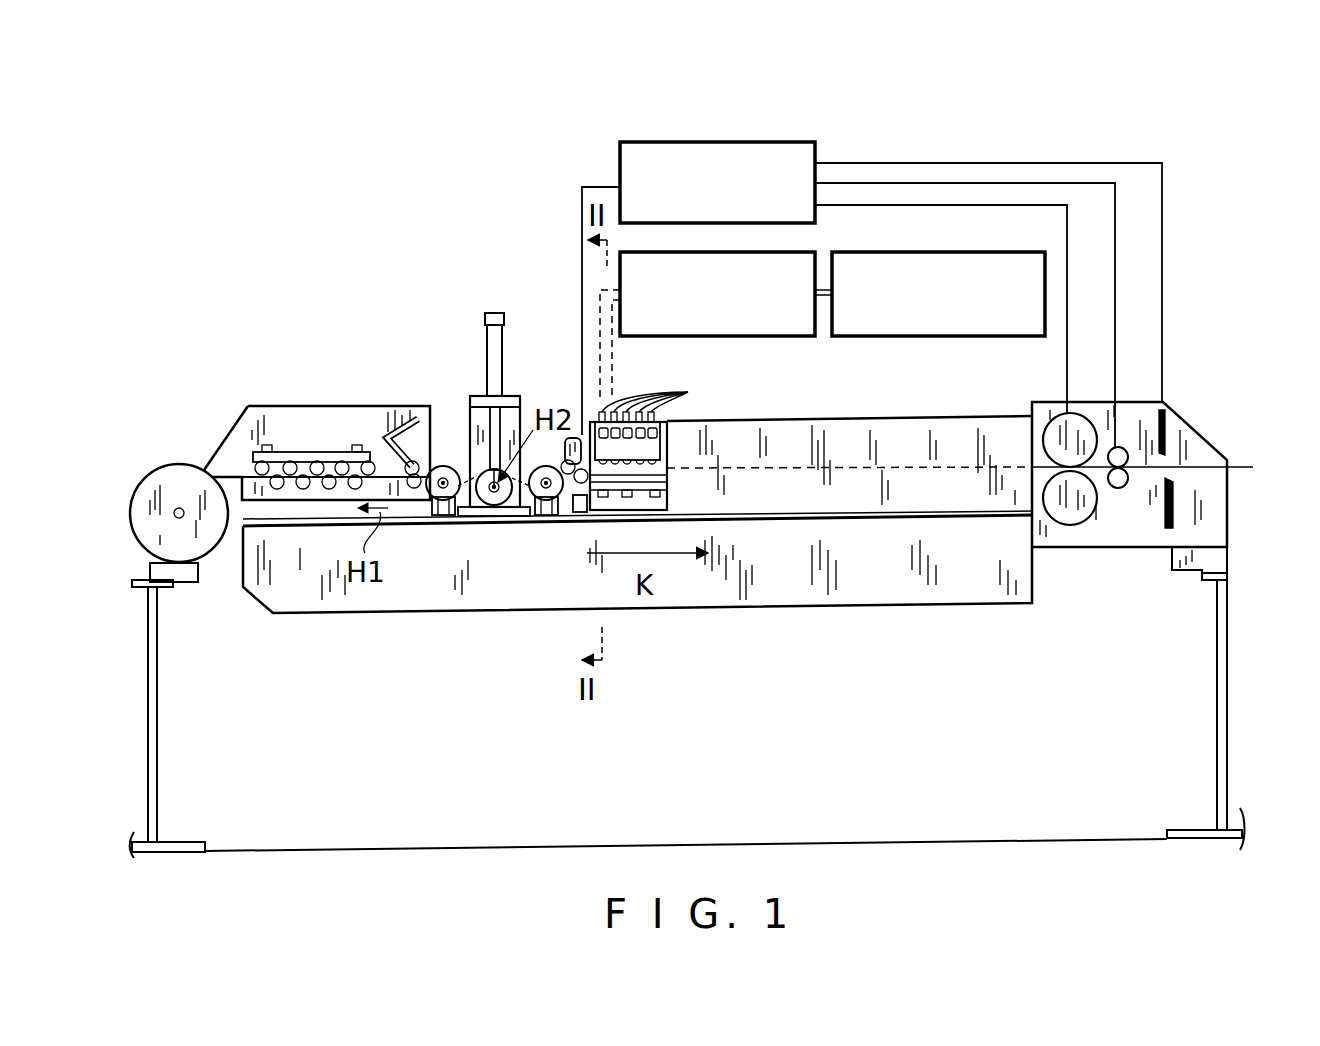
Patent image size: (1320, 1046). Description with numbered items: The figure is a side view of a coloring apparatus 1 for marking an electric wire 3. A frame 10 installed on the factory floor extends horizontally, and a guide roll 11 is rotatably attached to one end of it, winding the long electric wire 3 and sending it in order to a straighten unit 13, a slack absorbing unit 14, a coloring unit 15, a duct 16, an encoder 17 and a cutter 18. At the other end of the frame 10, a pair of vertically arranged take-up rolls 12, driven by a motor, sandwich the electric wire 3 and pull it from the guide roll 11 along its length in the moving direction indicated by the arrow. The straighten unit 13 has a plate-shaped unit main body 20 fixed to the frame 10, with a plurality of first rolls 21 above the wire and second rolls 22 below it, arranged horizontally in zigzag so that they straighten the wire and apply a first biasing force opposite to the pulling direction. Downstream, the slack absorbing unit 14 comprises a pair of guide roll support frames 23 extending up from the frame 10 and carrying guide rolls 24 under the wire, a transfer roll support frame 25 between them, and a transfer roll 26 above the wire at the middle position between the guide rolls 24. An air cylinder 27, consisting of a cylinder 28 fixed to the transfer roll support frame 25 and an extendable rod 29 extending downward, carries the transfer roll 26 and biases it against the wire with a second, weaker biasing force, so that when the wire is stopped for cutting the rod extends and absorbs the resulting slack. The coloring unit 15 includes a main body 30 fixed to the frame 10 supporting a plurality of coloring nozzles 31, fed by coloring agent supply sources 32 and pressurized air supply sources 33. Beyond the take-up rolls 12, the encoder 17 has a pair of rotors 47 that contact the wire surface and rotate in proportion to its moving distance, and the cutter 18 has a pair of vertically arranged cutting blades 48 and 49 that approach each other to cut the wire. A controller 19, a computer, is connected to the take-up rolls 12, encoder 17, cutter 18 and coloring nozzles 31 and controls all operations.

The coloring apparatus 1 is at (408, 356).
The electric wire 3 is at (218, 445).
The frame 10 is at (457, 612).
The guide roll 11 is at (168, 468).
The take-up rolls 12 is at (1050, 413).
The straighten unit 13 is at (311, 436).
The slack absorbing unit 14 is at (512, 395).
The coloring unit 15 is at (614, 338).
The duct 16 is at (922, 417).
The encoder 17 is at (1108, 548).
The cutter 18 is at (1182, 488).
The controller 19 is at (732, 142).
The unit main body 20 is at (295, 450).
The first rolls 21 is at (277, 460).
The second rolls 22 is at (355, 490).
The guide roll support frames 23 is at (440, 500).
The guide rolls 24 is at (437, 513).
The transfer roll support frame 25 is at (516, 410).
The transfer roll 26 is at (478, 476).
The air cylinder 27 is at (488, 350).
The cylinder 28 is at (500, 314).
The extendable rod 29 is at (505, 440).
The main body 30 is at (616, 492).
The coloring nozzles 31 is at (607, 526).
The coloring agent supply sources 32 is at (795, 252).
The pressurized air supply sources 33 is at (940, 250).
The rotors 47 is at (1118, 447).
The cutting blade 48 is at (1168, 432).
The cutting blade 49 is at (1176, 548).